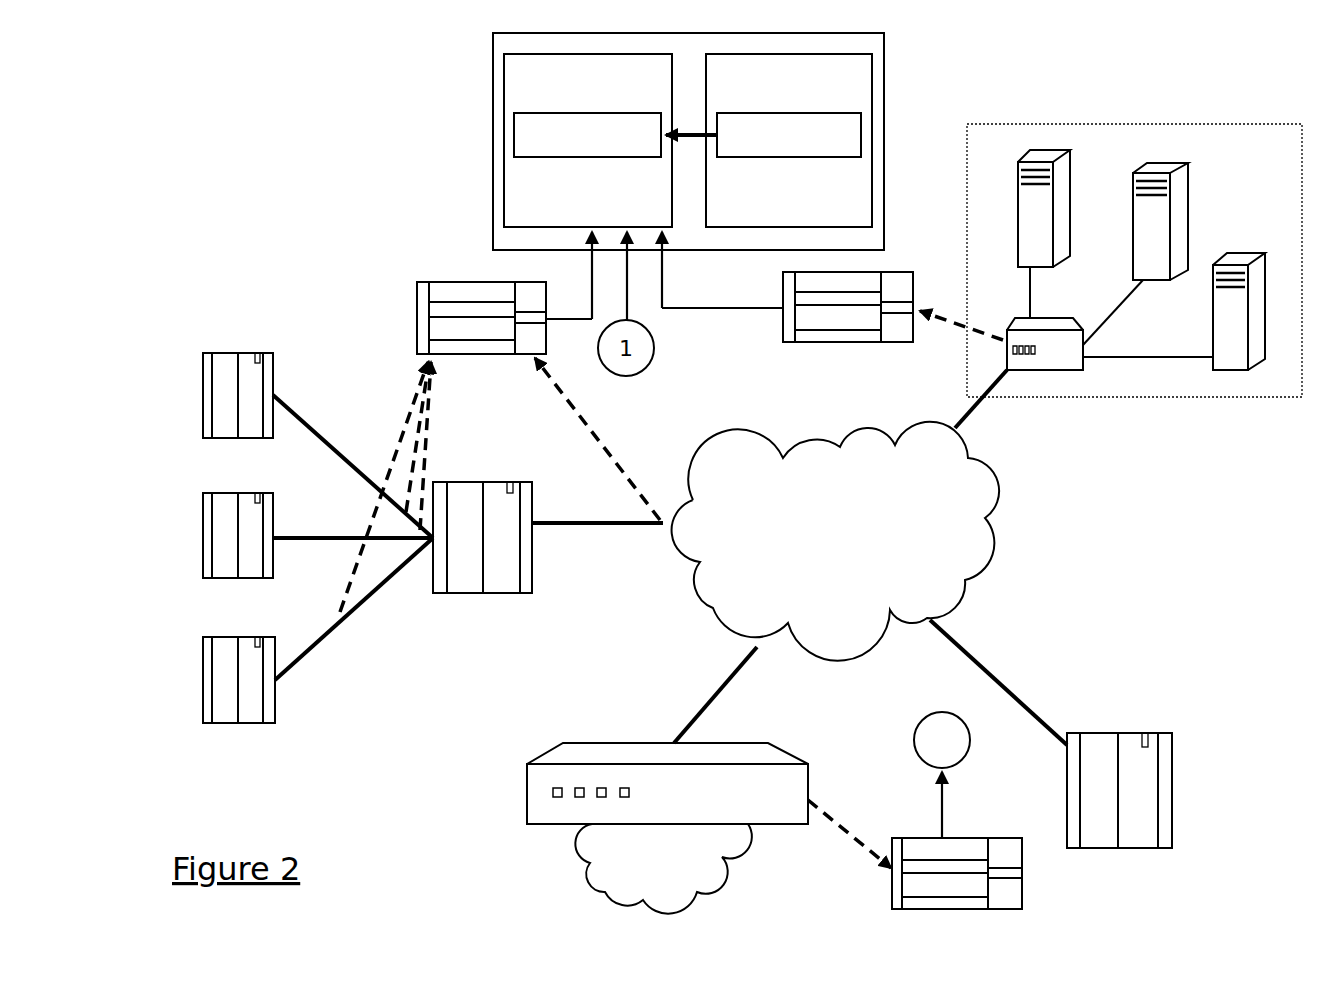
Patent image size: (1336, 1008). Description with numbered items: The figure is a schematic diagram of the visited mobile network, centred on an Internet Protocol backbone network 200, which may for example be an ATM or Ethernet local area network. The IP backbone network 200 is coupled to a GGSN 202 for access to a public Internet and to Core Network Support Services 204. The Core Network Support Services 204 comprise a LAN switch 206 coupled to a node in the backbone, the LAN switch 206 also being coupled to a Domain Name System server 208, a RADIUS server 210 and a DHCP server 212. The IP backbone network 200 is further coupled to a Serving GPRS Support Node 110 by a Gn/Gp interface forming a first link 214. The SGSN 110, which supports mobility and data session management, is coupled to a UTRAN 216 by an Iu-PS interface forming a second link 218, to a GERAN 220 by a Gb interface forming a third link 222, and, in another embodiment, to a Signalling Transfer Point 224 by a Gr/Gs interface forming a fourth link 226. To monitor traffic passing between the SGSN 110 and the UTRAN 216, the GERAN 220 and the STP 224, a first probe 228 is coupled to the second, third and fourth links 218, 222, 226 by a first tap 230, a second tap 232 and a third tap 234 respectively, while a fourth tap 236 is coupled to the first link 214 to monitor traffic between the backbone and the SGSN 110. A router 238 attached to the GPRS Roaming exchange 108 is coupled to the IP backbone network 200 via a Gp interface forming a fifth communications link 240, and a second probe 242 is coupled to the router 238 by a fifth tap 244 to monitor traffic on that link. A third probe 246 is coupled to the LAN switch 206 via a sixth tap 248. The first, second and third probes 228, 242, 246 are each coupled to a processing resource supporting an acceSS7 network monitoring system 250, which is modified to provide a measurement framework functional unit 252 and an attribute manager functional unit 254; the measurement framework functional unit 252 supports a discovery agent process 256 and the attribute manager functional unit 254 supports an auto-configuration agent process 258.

The GPRS Roaming exchange 108 is at (663, 869).
The Serving GPRS Support Node 110 is at (510, 598).
The IP backbone network 200 is at (836, 541).
The GGSN 202 is at (1248, 400).
The Core Network Support Services 204 is at (1172, 805).
The LAN switch 206 is at (1045, 372).
The Domain Name System server 208 is at (1188, 188).
The RADIUS server 210 is at (1072, 185).
The DHCP server 212 is at (1250, 255).
The first link 214 is at (606, 530).
The UTRAN 216 is at (220, 352).
The second link 218 is at (300, 428).
The GERAN 220 is at (248, 585).
The third link 222 is at (325, 542).
The Signalling Transfer Point 224 is at (233, 725).
The fourth link 226 is at (305, 655).
The first probe 228 is at (453, 282).
The first tap 230 is at (430, 437).
The second tap 232 is at (410, 414).
The third tap 234 is at (412, 470).
The fourth tap 236 is at (590, 430).
The router 238 is at (762, 741).
The fifth communications link 240 is at (705, 690).
The second probe 242 is at (1022, 882).
The fifth tap 244 is at (835, 800).
The third probe 246 is at (898, 268).
The sixth tap 248 is at (945, 320).
The acceSS7 network monitoring system 250 is at (885, 60).
The measurement framework functional unit 252 is at (504, 90).
The attribute manager functional unit 254 is at (872, 112).
The discovery agent process 256 is at (587, 135).
The auto-configuration agent process 258 is at (763, 135).